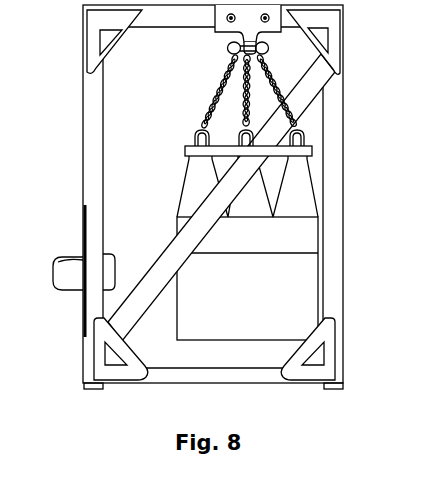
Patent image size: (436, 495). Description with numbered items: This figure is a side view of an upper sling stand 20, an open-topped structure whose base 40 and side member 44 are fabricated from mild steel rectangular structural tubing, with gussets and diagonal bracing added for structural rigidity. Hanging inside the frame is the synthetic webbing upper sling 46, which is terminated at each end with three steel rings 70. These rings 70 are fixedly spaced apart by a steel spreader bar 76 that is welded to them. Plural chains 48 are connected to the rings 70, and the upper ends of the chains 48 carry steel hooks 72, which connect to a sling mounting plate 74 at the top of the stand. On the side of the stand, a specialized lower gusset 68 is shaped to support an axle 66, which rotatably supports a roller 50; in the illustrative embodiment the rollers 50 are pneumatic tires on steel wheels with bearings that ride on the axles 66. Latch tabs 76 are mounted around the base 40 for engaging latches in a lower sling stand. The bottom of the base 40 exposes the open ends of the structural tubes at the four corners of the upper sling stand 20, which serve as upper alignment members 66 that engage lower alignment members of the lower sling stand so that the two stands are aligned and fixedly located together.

The upper sling stand 20 is at (18, 211).
The base 40 is at (213, 384).
The side member 44 is at (83, 146).
The upper sling 46 is at (217, 340).
The chains 48 is at (211, 103).
The rollers 50 is at (72, 257).
The axles / upper alignment members 66 is at (93, 389).
The lower gussets 68 is at (85, 322).
The steel rings 70 is at (194, 138).
The steel hooks 72 is at (227, 51).
The sling mounting plate 74 is at (216, 33).
The spreader bar / latch tabs 76 is at (185, 151).